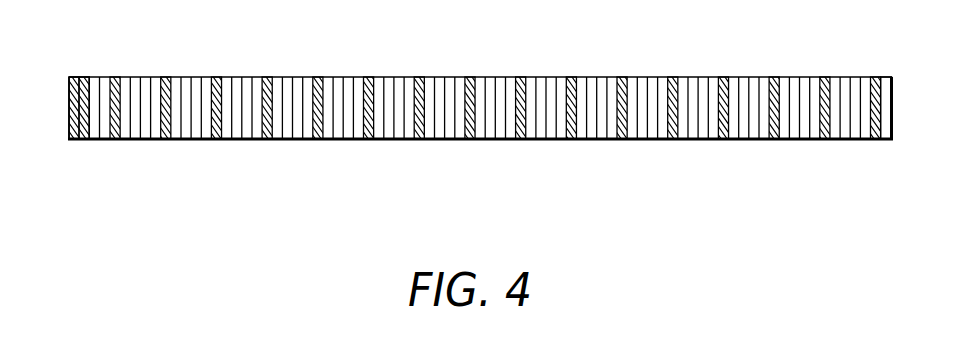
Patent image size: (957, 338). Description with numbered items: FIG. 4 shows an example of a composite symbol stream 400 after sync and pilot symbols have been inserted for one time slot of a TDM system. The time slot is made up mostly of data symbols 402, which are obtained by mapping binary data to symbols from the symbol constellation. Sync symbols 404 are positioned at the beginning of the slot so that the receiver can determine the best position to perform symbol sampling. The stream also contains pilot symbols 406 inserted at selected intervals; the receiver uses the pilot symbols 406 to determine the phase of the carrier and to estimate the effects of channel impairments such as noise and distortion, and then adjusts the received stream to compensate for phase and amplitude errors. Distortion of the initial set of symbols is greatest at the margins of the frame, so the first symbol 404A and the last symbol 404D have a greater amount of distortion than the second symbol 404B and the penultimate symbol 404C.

The composite symbol stream 400 is at (603, 228).
The data symbols 402 is at (203, 77).
The sync symbols 404 is at (69, 124).
The first symbol 404A is at (72, 77).
The second symbol 404B is at (87, 77).
The penultimate symbol 404C is at (877, 143).
The last symbol 404D is at (888, 77).
The pilot symbols 406 is at (217, 142).